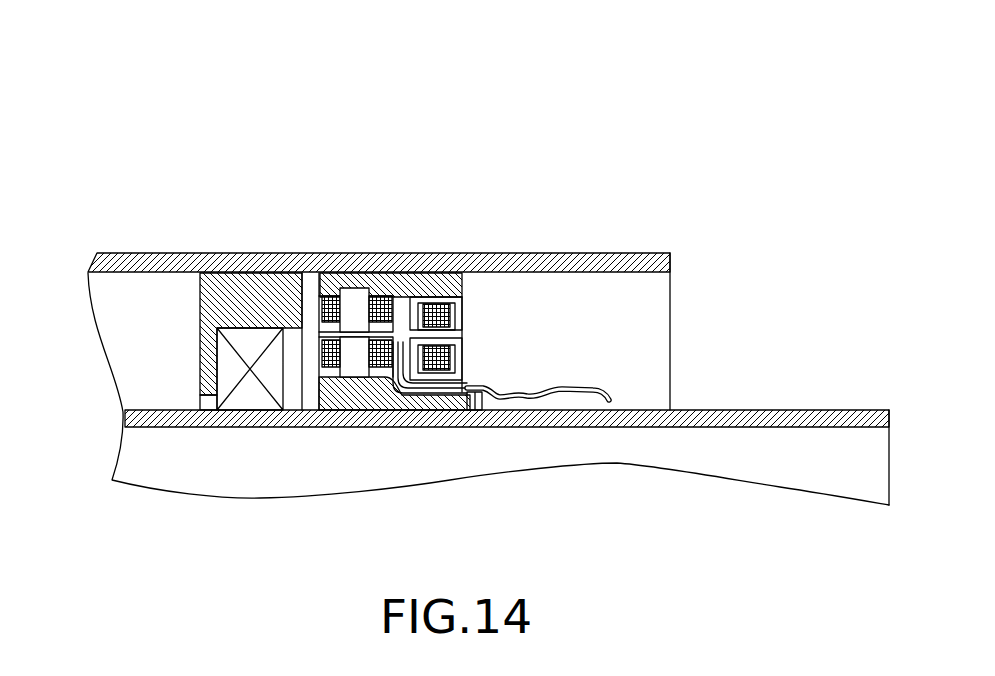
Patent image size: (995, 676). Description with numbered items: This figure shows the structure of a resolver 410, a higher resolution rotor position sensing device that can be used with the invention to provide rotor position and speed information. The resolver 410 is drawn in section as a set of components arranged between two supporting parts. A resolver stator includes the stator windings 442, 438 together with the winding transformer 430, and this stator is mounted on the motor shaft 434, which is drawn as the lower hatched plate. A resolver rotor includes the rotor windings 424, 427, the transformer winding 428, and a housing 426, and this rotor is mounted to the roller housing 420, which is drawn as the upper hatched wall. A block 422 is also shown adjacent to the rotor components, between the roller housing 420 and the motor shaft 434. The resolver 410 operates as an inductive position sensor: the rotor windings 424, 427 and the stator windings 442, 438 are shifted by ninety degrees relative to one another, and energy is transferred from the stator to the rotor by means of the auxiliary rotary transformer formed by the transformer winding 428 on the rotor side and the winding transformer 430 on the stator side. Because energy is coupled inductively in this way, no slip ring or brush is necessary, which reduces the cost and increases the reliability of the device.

The resolver 410 is at (721, 116).
The roller housing 420 is at (176, 258).
The support block 422 is at (252, 297).
The rotor winding 424 is at (332, 296).
The housing 426 is at (366, 285).
The rotor winding 427 is at (388, 296).
The transformer winding 428 is at (440, 303).
The winding transformer 430 is at (463, 347).
The motor shaft 434 is at (713, 410).
The stator winding 438 is at (382, 342).
The stator winding 442 is at (328, 357).